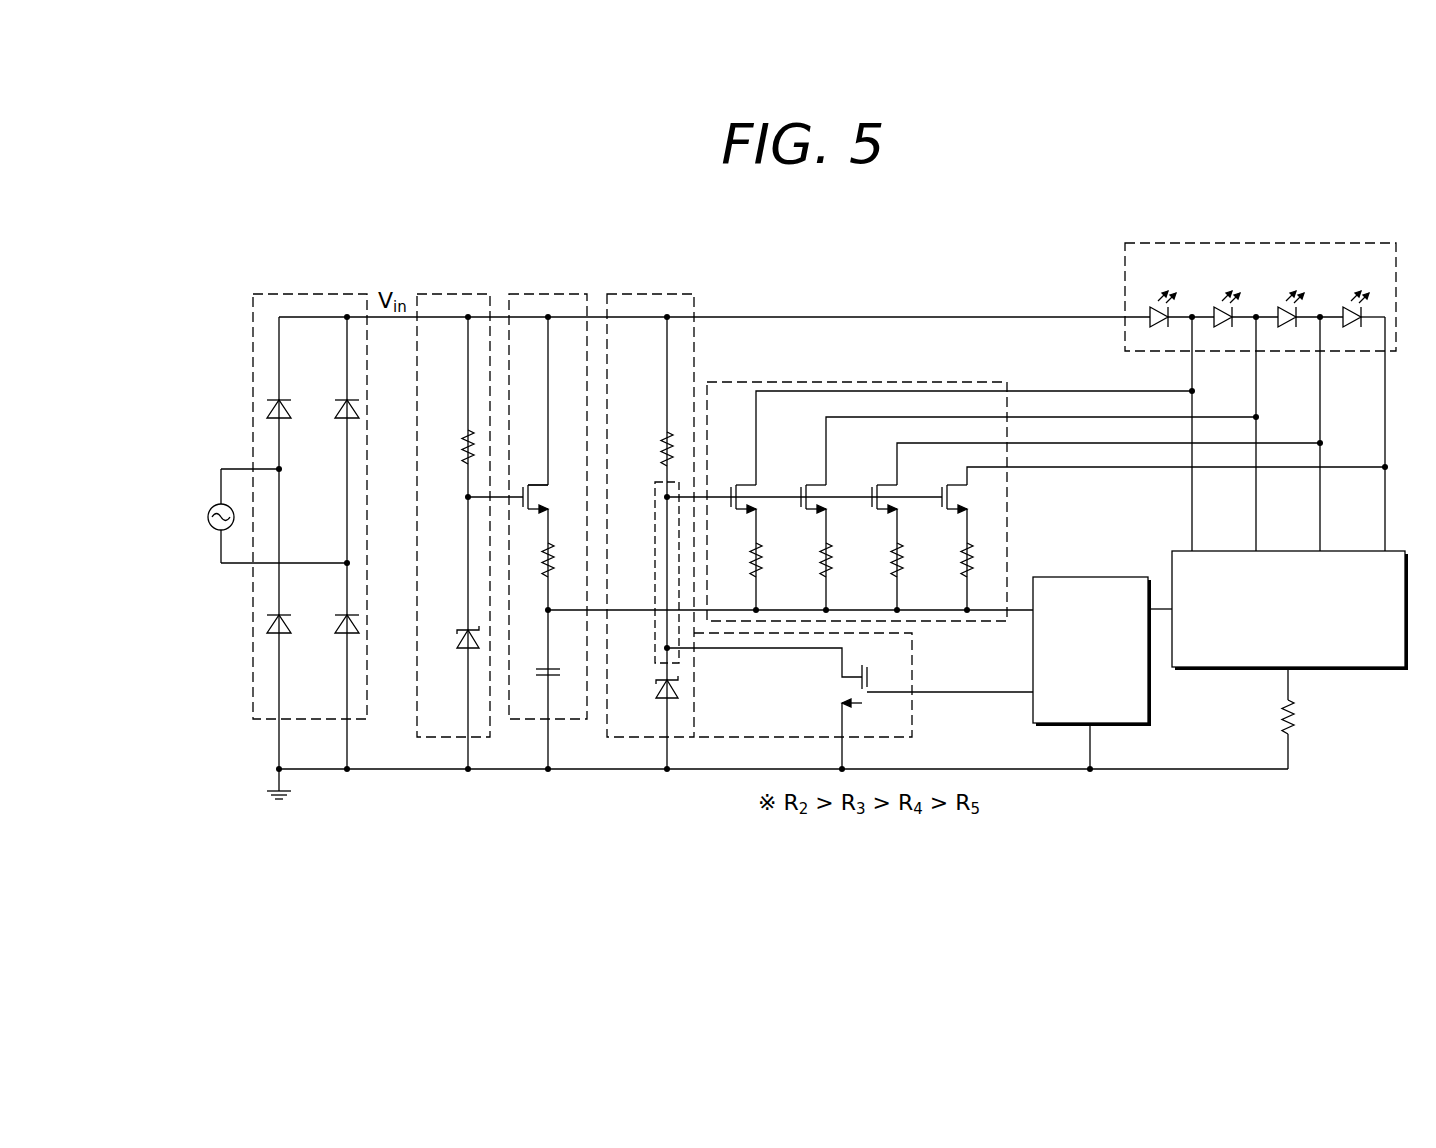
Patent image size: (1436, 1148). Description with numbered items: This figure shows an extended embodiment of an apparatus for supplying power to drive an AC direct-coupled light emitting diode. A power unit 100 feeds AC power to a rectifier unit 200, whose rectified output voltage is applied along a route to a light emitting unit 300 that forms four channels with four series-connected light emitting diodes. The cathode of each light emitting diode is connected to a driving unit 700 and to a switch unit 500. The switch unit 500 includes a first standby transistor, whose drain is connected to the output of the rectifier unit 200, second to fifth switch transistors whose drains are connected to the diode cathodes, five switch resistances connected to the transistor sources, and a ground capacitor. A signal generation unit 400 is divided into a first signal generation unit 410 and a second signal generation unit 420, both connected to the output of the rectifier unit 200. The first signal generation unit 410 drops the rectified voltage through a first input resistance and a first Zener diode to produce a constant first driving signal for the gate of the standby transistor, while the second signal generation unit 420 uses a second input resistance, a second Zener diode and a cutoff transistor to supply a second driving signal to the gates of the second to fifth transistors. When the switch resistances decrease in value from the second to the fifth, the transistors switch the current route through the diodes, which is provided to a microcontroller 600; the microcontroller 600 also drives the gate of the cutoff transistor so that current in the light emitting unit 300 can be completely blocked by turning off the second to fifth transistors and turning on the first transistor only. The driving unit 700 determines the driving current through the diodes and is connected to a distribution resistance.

The power unit 100 is at (215, 507).
The rectifier unit 200 is at (310, 294).
The light emitting unit 300 is at (1259, 243).
The signal generation unit 400 is at (640, 830).
The first signal generation unit 410 is at (440, 737).
The second signal generation unit 420 is at (624, 737).
The switch unit 500 is at (550, 294).
The microcontroller 600 is at (1102, 673).
The driving unit 700 is at (1290, 660).